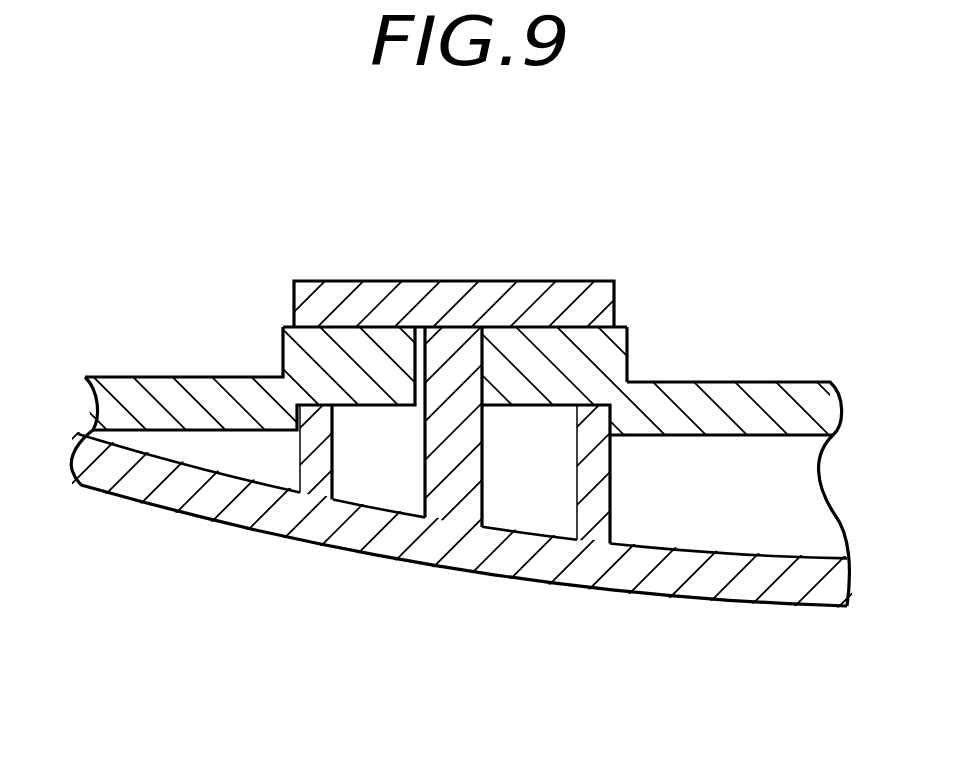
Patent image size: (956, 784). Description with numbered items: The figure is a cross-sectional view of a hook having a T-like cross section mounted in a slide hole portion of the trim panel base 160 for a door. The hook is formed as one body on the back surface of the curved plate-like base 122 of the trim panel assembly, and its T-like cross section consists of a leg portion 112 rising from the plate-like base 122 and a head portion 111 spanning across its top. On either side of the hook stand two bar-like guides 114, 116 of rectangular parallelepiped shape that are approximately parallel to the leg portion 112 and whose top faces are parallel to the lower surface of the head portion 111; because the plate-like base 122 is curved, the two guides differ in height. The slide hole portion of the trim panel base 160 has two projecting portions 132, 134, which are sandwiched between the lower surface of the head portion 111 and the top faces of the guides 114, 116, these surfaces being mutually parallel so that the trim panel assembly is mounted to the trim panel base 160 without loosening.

The head portion 111 is at (538, 294).
The leg portion 112 is at (472, 295).
The projecting portion 134 is at (331, 288).
The projecting portion 132 is at (600, 365).
The trim panel base 160 is at (772, 400).
The plate-like base 122 is at (191, 493).
The bar-like guide 116 is at (314, 483).
The bar-like guide 114 is at (595, 503).